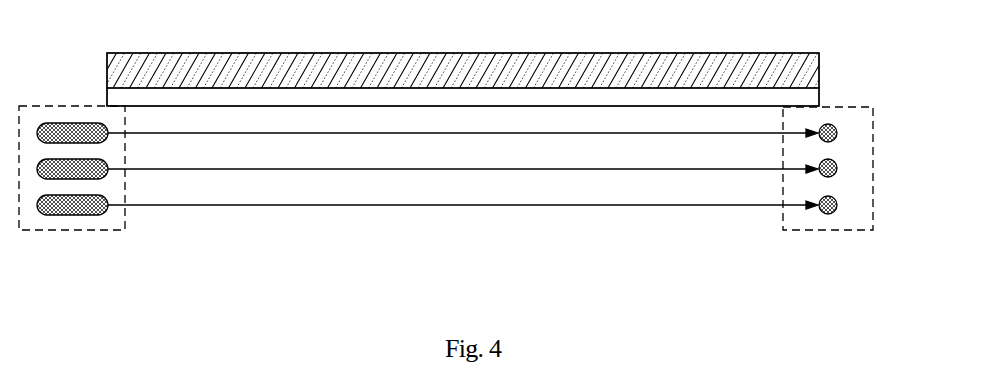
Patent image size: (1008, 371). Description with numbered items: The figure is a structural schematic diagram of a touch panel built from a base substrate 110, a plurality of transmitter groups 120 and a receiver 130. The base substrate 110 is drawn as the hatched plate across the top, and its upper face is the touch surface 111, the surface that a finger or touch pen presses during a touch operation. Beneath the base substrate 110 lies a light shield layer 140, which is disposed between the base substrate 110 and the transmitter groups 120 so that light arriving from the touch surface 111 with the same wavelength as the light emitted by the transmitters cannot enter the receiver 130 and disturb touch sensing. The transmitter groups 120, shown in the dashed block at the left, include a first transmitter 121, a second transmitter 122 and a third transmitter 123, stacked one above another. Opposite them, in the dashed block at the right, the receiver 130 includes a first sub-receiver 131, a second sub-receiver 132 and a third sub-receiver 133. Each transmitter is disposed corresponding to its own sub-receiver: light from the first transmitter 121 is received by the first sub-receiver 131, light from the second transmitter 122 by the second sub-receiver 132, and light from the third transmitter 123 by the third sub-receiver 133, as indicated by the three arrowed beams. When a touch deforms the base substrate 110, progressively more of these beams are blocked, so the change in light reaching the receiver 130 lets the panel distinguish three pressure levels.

The base substrate 110 is at (218, 62).
The touch surface 111 is at (393, 53).
The light shield layer 140 is at (513, 99).
The transmitter groups 120 is at (22, 231).
The first transmitter 121 is at (89, 130).
The second transmitter 122 is at (87, 172).
The third transmitter 123 is at (58, 209).
The receiver 130 is at (789, 231).
The first sub-receiver 131 is at (828, 124).
The second sub-receiver 132 is at (832, 177).
The third sub-receiver 133 is at (829, 213).